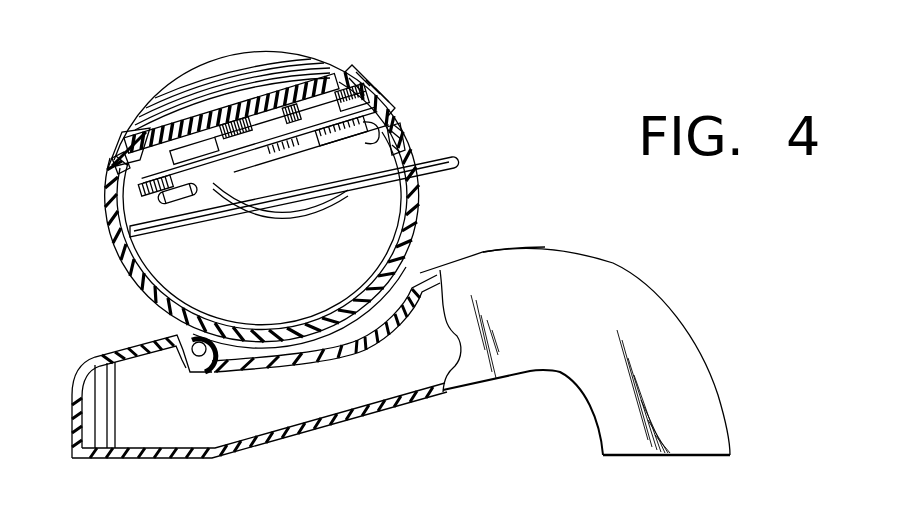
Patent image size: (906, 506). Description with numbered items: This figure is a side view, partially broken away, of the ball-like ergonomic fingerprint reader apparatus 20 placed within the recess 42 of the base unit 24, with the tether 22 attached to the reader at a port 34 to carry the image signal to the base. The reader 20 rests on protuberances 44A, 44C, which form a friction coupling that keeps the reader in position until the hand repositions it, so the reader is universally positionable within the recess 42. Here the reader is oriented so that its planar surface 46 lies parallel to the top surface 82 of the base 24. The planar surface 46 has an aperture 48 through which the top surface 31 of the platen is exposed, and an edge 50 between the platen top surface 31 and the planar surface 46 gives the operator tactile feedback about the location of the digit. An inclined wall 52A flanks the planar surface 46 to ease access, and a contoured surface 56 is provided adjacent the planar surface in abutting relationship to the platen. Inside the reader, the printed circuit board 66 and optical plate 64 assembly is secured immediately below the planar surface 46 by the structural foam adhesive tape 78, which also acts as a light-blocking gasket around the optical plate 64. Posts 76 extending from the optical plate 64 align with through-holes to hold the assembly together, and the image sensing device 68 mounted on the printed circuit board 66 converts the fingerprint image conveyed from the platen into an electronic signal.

The ergonomic fingerprint reader apparatus 20 is at (106, 231).
The tether 22 is at (337, 190).
The base unit 24 is at (648, 281).
The top surface of the platen 31 is at (183, 152).
The port 34 is at (418, 185).
The recess 42 is at (316, 364).
The protuberance 44A is at (187, 335).
The protuberance 44C is at (360, 322).
The planar surface 46 is at (306, 90).
The aperture 48 is at (263, 100).
The edge 50 is at (250, 98).
The wall 52A is at (205, 85).
The contoured surface 56 is at (137, 117).
The optical plate 64 is at (385, 90).
The printed circuit board 66 is at (211, 181).
The image sensing device 68 is at (402, 116).
The posts 76 is at (112, 168).
The structural foam adhesive tape 78 is at (347, 93).
The top surface of the base 82 is at (484, 252).